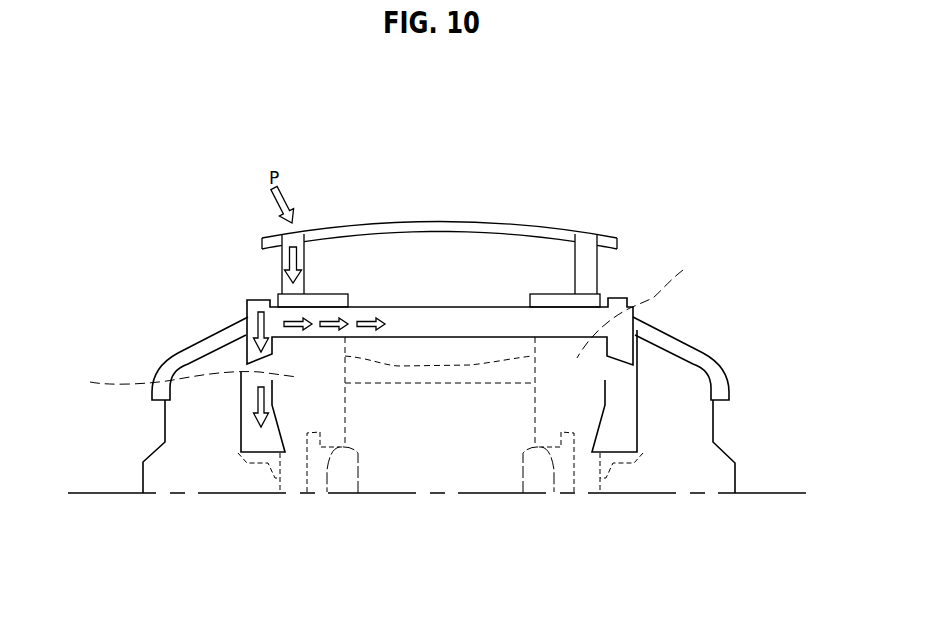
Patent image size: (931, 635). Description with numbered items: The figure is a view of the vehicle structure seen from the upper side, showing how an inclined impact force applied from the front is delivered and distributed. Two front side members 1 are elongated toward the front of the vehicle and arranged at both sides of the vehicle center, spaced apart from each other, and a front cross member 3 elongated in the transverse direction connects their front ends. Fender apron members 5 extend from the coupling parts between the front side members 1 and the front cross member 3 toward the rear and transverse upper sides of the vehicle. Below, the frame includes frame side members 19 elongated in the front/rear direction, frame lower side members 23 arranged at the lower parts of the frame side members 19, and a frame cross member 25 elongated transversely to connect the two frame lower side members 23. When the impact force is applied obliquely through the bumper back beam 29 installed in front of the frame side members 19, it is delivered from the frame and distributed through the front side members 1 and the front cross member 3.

The front side member 1 is at (250, 386).
The front cross member 3 is at (422, 322).
The fender apron member 5 is at (203, 347).
The frame side member 19 is at (382, 320).
The frame lower side member 23 is at (358, 493).
The frame cross member 25 is at (422, 370).
The bumper back beam 29 is at (518, 233).